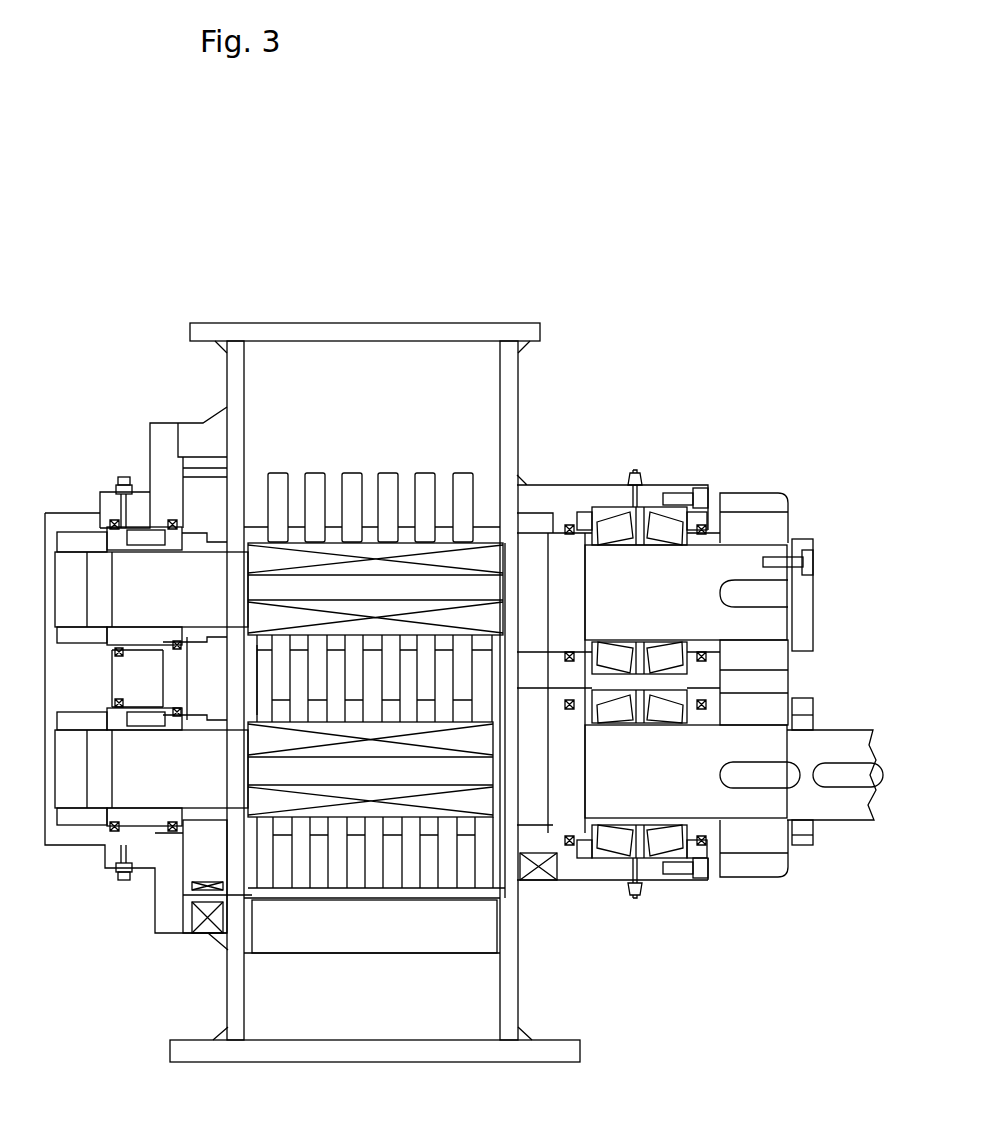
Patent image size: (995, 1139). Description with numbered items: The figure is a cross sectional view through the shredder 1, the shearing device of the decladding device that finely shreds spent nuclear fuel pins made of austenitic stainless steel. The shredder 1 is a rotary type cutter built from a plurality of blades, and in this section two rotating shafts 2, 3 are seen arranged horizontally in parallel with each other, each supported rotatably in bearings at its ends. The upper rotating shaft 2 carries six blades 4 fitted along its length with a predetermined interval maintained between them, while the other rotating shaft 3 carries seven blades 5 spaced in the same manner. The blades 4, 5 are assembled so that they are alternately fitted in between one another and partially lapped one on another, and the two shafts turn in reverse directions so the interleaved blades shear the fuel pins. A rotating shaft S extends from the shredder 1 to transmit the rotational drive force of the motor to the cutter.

The shredder 1 is at (647, 364).
The rotating shaft 2 is at (705, 567).
The rotating shaft 3 is at (733, 803).
The blades 4 is at (354, 483).
The blades 5 is at (410, 878).
The rotating shaft S is at (838, 745).